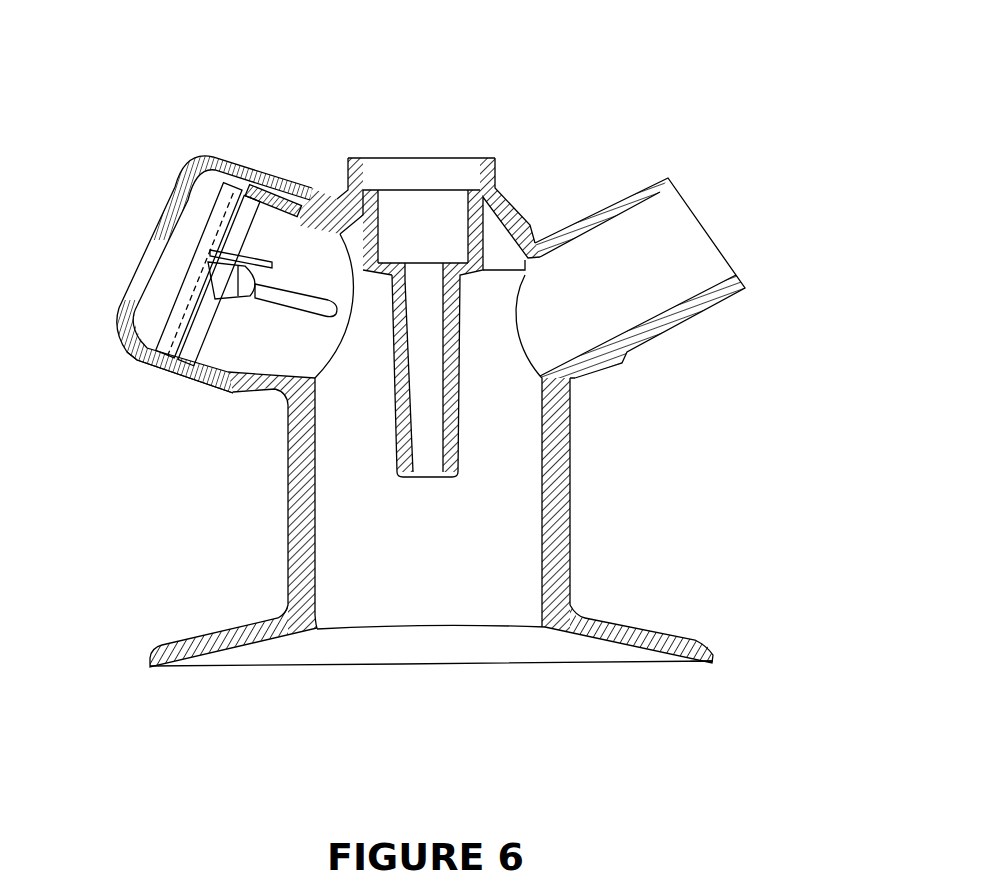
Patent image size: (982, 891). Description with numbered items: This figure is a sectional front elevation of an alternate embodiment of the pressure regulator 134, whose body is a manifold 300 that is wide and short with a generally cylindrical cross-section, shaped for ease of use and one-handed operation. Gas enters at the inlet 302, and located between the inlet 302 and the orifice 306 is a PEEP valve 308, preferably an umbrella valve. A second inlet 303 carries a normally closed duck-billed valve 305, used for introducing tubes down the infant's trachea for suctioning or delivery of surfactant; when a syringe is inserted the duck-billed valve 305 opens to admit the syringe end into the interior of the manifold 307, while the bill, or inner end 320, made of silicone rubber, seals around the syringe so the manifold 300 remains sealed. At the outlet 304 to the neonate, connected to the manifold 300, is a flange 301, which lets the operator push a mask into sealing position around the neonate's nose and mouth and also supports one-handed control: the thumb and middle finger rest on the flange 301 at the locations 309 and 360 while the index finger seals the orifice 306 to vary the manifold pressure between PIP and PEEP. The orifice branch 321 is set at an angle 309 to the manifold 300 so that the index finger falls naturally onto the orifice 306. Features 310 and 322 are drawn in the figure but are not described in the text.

The pressure regulator 134 is at (684, 112).
The manifold 300 is at (562, 448).
The flange 301 is at (695, 662).
The inlet 302 is at (695, 272).
The inlet 303 is at (448, 204).
The outlet 304 is at (362, 657).
The duck-billed valve 305 is at (435, 262).
The orifice 306 is at (160, 232).
The interior of the manifold 307 is at (523, 508).
The PEEP valve 308 is at (268, 188).
The angle 309 is at (687, 632).
The plate 310 is at (195, 365).
The inner end 320 is at (435, 470).
The orifice branch 321 is at (277, 381).
The cap bottom wall 322 is at (137, 365).
The flange location 360 is at (210, 633).